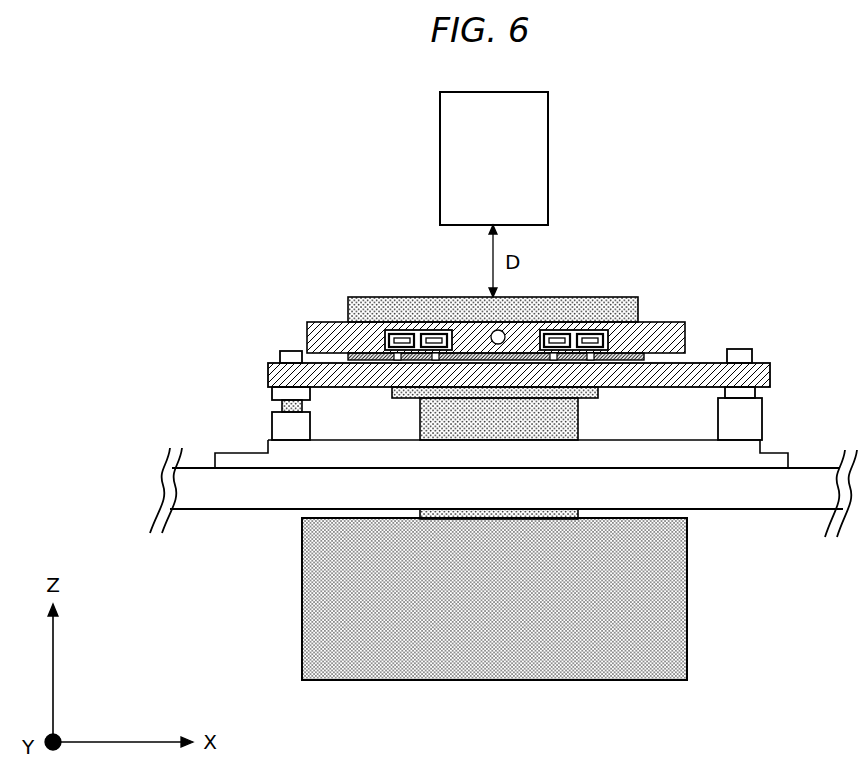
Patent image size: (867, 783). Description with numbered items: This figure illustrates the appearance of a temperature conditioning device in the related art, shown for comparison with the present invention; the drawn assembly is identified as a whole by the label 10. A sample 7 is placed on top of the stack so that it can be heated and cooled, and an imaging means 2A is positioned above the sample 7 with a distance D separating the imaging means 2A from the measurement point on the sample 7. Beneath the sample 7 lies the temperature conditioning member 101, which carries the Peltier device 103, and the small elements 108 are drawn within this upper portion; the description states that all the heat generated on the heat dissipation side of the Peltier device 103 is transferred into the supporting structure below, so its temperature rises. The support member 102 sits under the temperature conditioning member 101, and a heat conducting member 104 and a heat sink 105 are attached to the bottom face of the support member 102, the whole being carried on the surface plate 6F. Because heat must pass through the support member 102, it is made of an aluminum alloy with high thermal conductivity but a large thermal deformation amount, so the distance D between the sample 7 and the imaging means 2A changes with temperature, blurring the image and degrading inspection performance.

The imaging means 2A is at (540, 142).
The substrate holding device 10 is at (355, 267).
The sample 7 is at (622, 312).
The holding plate 101 is at (648, 320).
The sensor / electrostatic chuck element 108 is at (396, 346).
The Peltier device 103 is at (362, 355).
The base plate 102 is at (276, 375).
The support column 104 is at (562, 422).
The stage surface plate 6F is at (249, 497).
The drive unit 105 is at (561, 670).